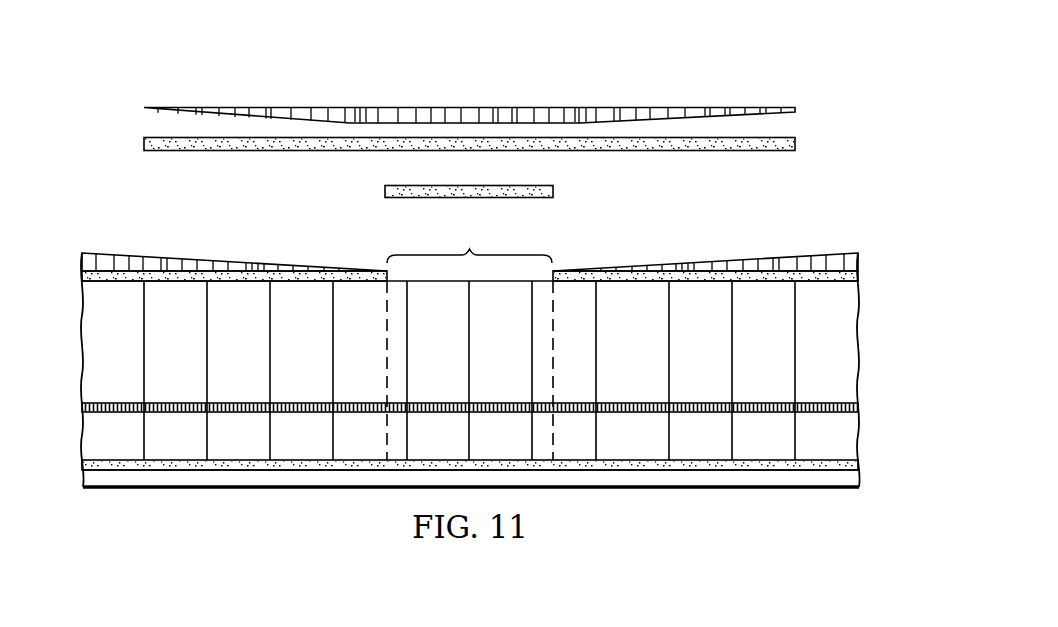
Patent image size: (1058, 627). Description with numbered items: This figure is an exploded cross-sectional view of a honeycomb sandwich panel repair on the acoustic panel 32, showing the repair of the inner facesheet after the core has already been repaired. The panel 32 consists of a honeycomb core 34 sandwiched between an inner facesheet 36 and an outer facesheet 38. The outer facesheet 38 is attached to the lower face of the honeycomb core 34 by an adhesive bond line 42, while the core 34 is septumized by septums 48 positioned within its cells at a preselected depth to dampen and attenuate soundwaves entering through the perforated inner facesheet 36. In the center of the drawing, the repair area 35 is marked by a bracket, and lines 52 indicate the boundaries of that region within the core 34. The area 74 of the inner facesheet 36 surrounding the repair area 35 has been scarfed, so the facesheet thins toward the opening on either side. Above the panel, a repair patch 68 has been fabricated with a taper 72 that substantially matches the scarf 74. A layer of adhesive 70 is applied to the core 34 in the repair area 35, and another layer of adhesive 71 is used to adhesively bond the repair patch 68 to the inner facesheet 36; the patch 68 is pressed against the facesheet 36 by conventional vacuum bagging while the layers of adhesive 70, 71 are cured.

The acoustic panel 32 is at (737, 67).
The honeycomb core 34 is at (872, 371).
The repair area 35 is at (469, 242).
The inner facesheet 36 is at (233, 271).
The outer facesheet 38 is at (668, 489).
The adhesive bond line 42 is at (858, 464).
The septums 48 is at (241, 401).
The cut line 52 is at (384, 362).
The repair patch 68 is at (641, 110).
The layer of adhesive 70 is at (385, 191).
The layer of adhesive 71 is at (144, 142).
The taper 72 is at (361, 118).
The scarf 74 is at (140, 264).